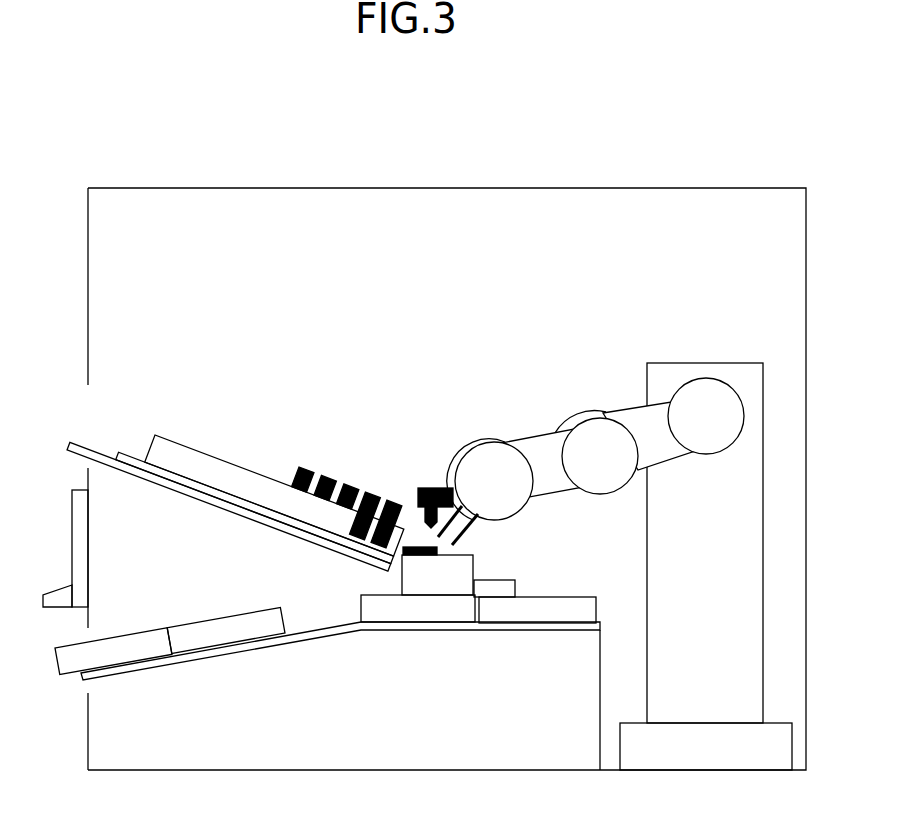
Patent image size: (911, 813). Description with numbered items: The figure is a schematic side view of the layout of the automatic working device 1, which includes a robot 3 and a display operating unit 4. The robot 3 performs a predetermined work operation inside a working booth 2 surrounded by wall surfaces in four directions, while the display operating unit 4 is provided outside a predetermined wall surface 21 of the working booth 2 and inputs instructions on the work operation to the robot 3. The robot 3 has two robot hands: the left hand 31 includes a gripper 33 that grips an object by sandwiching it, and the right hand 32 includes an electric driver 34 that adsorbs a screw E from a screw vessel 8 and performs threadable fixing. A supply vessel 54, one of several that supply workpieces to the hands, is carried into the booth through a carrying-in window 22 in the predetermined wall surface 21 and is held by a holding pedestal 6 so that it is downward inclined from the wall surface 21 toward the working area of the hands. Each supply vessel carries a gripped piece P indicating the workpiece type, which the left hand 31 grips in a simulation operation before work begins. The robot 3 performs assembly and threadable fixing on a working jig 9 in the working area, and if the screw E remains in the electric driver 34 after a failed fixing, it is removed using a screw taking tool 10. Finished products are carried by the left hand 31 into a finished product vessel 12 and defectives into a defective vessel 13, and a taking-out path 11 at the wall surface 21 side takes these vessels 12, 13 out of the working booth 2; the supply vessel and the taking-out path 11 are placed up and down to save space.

The automatic working device 1 is at (537, 113).
The working booth 2 is at (648, 200).
The robot 3 is at (710, 370).
The display operating unit 4 is at (76, 552).
The holding pedestal 6 is at (70, 445).
The screw vessel 8 is at (512, 588).
The working jig 9 is at (452, 600).
The screw taking tool 10 is at (420, 558).
The taking-out path 11 is at (325, 645).
The finished product vessel 12 is at (130, 656).
The defective vessel 13 is at (232, 640).
The predetermined wall surface 21 is at (88, 288).
The carrying-in window 22 is at (72, 406).
The left hand 31 is at (668, 455).
The right hand 32 is at (540, 440).
The gripper 33 is at (486, 535).
The electric driver 34 is at (437, 488).
The supply vessel 54 is at (130, 462).
The screw E is at (426, 518).
The gripped piece P is at (301, 466).